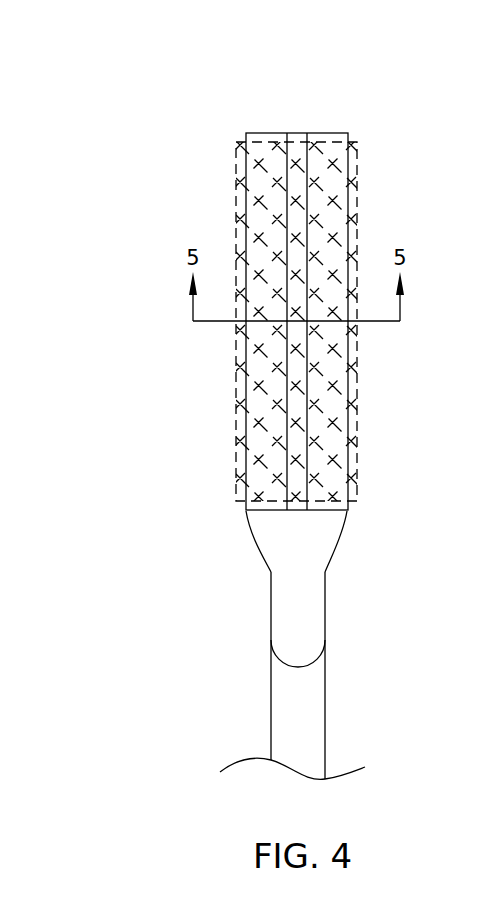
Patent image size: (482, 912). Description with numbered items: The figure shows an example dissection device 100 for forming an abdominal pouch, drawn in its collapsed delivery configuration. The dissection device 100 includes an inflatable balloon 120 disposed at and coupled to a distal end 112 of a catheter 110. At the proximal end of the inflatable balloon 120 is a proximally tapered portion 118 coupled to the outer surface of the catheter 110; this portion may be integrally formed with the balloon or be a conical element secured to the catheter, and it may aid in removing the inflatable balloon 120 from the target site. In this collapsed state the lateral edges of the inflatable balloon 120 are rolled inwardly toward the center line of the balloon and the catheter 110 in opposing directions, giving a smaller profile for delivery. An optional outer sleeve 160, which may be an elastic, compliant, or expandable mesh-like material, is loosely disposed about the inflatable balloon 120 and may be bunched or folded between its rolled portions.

The dissection device 100 is at (138, 72).
The outer sleeve 160 is at (357, 197).
The inflatable balloon 120 is at (350, 385).
The proximally tapered portion 118 is at (275, 548).
The distal end 112 is at (348, 590).
The catheter 110 is at (308, 717).